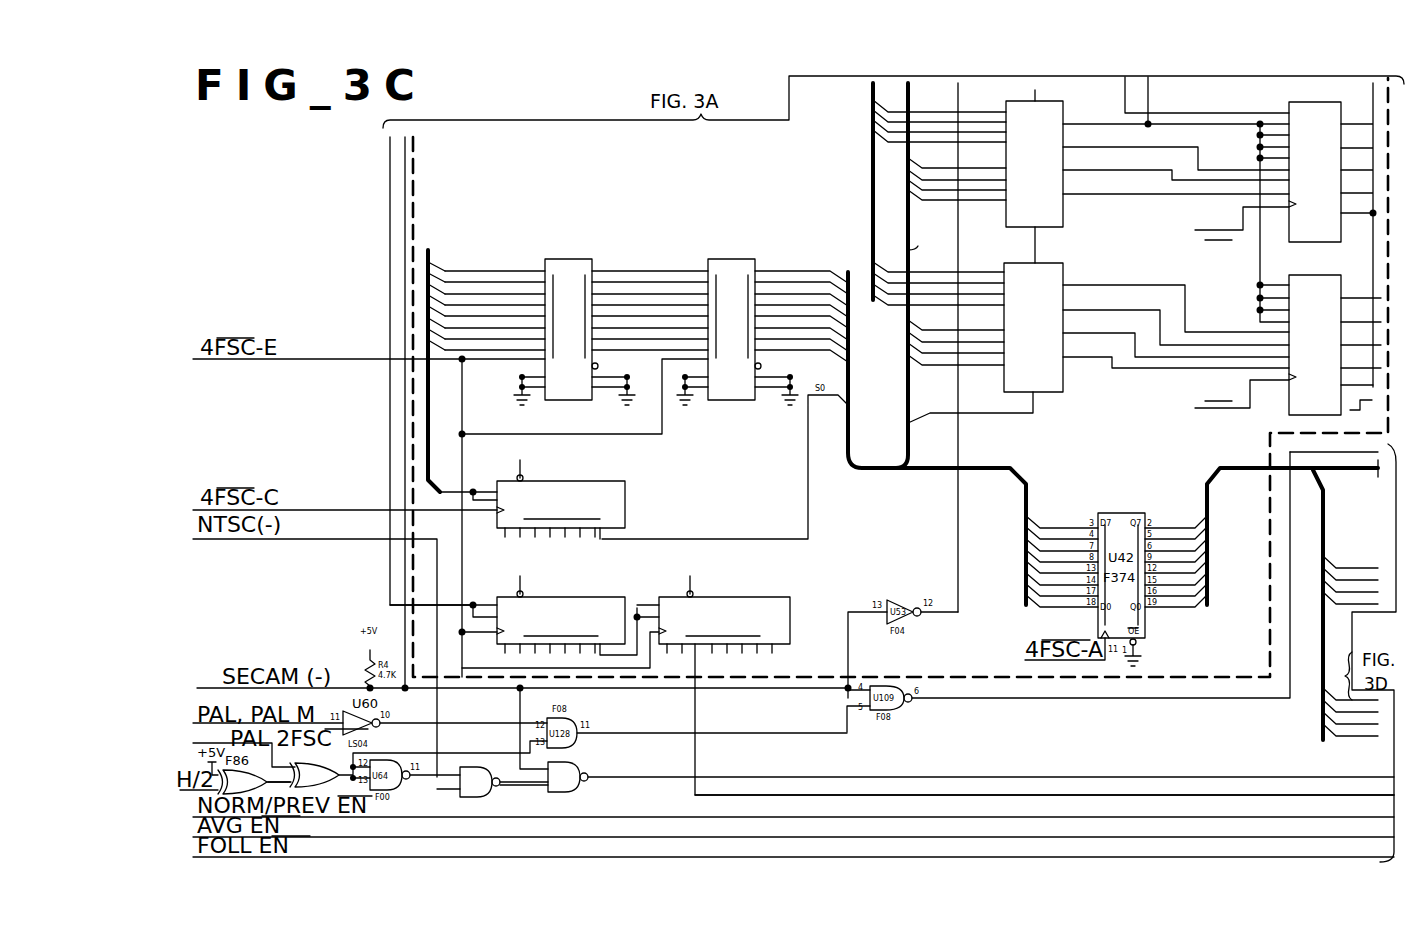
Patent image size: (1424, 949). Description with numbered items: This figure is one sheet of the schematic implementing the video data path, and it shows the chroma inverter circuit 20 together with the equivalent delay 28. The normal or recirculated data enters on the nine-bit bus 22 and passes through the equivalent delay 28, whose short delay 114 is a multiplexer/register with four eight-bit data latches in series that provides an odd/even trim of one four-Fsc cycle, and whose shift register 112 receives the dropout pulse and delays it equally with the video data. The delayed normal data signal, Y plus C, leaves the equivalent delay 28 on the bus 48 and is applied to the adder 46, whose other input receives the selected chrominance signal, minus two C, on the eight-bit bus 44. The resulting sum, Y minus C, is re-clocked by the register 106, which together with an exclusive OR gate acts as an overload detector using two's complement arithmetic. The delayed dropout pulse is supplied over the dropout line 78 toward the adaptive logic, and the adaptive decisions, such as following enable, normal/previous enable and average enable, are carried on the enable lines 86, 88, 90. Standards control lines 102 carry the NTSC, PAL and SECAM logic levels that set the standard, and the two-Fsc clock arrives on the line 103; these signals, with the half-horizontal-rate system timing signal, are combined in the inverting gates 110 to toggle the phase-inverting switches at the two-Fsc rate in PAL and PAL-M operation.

The chroma inverter circuit 20 is at (400, 223).
The 9-bit bus 22 is at (432, 258).
The equivalent delay 28 is at (670, 450).
The 8-bit bus 44 is at (873, 93).
The adder 46 is at (1048, 245).
The bus 48 is at (916, 92).
The dropout line 78 is at (1300, 795).
The enable line 86 is at (398, 857).
The enable line 88 is at (398, 817).
The enable line 90 is at (398, 837).
The standards control lines 102 is at (407, 150).
The line 103 is at (322, 750).
The register 106 is at (1296, 273).
The inverting gates 110 is at (560, 793).
The shift register 112 is at (652, 592).
The short delay 114 is at (566, 268).